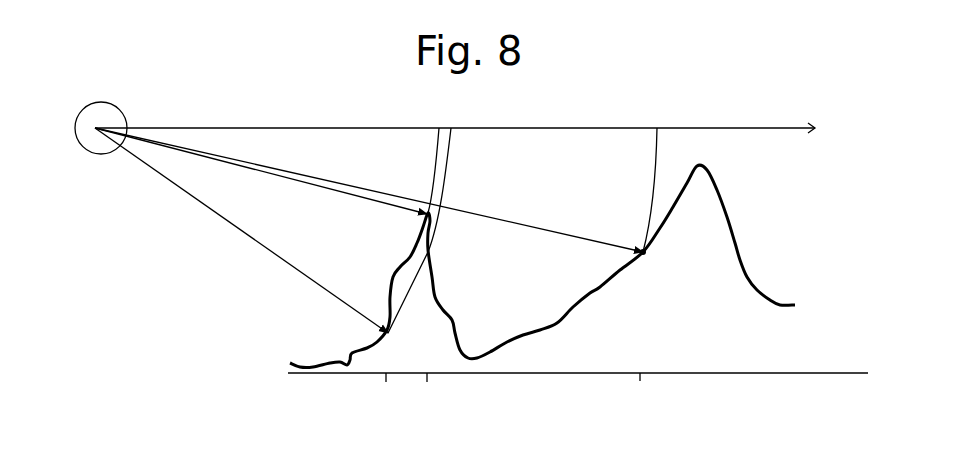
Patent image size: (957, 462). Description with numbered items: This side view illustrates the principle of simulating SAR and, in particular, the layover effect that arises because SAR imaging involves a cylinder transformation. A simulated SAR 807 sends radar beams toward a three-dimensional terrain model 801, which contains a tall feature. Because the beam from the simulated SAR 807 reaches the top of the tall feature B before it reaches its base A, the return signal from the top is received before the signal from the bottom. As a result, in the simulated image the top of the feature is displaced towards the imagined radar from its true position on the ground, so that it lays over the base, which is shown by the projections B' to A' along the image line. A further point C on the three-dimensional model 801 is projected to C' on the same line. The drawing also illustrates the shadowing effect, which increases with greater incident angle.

The simulated SAR 807 is at (102, 117).
The 3D model 801 is at (738, 254).
The base of the tall feature A is at (386, 390).
The top of the tall feature B is at (430, 390).
The terrain point C is at (640, 389).
The displaced position of the base A' is at (428, 220).
The displaced position of the top B' is at (437, 160).
The image-plane projection of point C C' is at (652, 179).